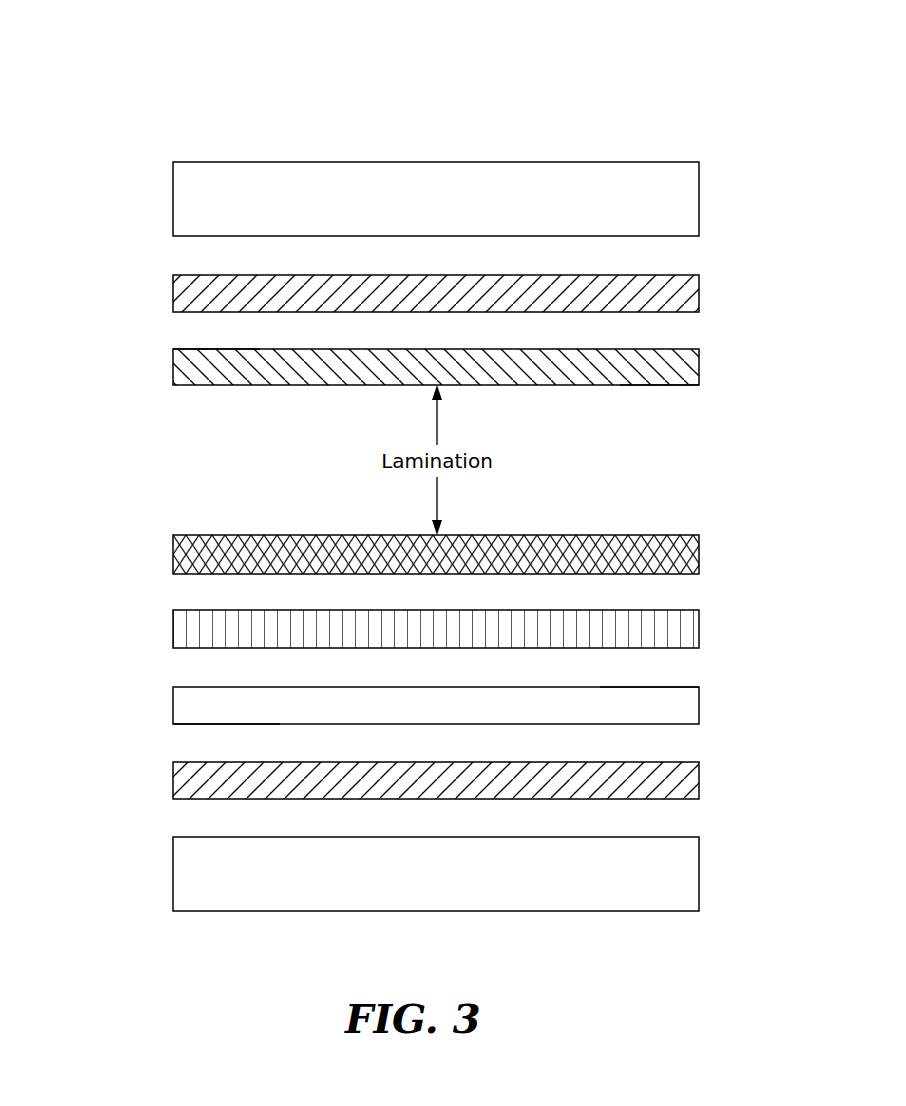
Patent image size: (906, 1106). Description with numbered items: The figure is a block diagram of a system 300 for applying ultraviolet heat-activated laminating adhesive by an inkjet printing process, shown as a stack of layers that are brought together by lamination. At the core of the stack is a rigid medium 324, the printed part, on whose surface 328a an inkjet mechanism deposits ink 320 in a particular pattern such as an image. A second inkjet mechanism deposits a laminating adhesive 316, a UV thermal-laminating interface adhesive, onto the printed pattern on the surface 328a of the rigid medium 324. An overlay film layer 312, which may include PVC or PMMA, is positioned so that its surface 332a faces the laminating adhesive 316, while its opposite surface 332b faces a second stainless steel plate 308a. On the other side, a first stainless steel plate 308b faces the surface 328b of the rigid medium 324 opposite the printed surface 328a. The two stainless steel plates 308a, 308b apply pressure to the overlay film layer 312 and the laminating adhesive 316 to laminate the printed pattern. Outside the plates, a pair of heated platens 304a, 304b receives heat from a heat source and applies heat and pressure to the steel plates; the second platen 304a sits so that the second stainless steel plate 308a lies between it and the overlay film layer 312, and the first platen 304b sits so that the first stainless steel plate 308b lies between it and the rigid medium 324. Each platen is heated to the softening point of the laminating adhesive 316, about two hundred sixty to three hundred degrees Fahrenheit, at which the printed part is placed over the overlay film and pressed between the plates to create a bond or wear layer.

The system 300 is at (130, 80).
The second platen 304a is at (436, 199).
The first platen 304b is at (436, 874).
The second stainless steel plate 308a is at (699, 288).
The first stainless steel plate 308b is at (699, 775).
The overlay film layer 312 is at (699, 357).
The laminating adhesive 316 is at (699, 552).
The ink 320 is at (699, 626).
The rigid medium 324 is at (436, 705).
The surface of the rigid medium 328a is at (680, 687).
The surface of the rigid medium opposite surface 328a 328b is at (197, 724).
The surface of the overlay film layer 332a is at (657, 385).
The surface of the overlay film layer opposite surface 332a 332b is at (193, 349).